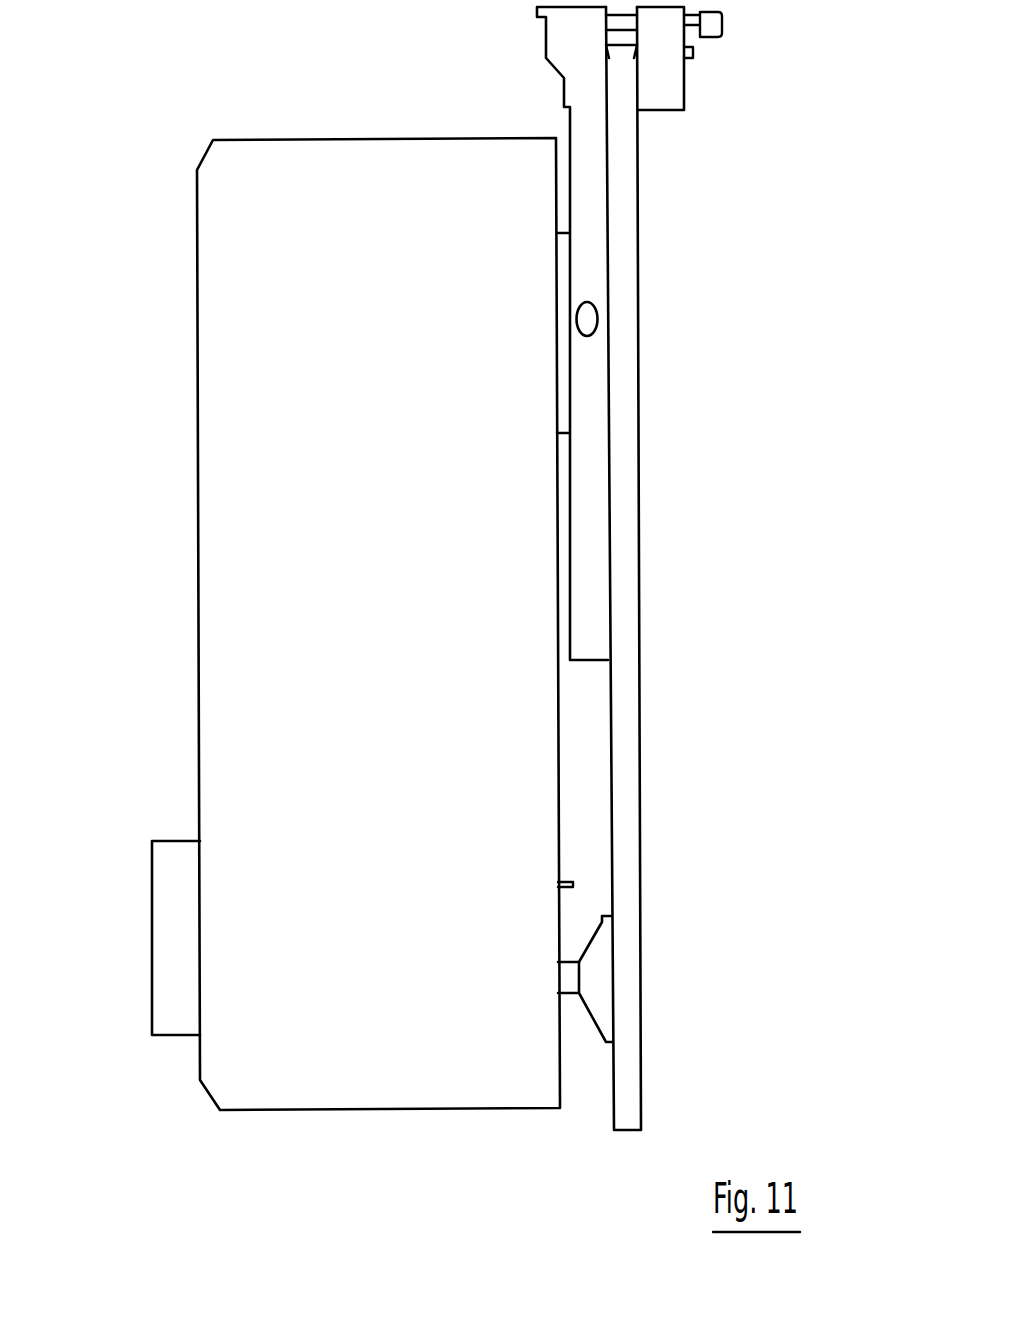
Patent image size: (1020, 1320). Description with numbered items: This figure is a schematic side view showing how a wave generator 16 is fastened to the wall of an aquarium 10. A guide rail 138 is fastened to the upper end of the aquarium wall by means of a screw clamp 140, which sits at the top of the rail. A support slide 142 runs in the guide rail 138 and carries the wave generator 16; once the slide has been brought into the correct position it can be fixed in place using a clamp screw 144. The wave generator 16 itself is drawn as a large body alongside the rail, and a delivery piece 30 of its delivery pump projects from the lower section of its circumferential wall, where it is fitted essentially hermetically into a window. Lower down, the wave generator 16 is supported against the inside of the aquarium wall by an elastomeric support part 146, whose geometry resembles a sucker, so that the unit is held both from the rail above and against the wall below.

The aquarium 10 is at (647, 702).
The wave generator 16 is at (195, 318).
The delivery piece 30 is at (167, 993).
The guide rail 138 is at (610, 495).
The screw clamp 140 is at (686, 77).
The support slide 142 is at (593, 272).
The clamp screw 144 is at (597, 320).
The elastomeric support part 146 is at (593, 980).